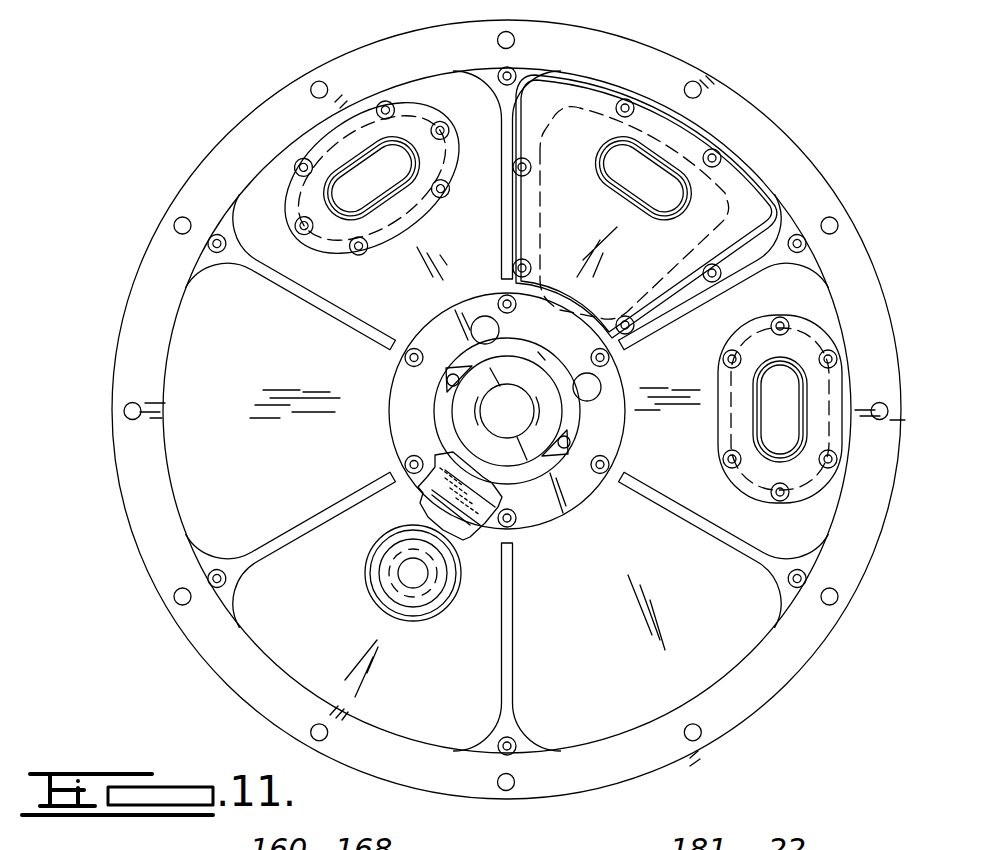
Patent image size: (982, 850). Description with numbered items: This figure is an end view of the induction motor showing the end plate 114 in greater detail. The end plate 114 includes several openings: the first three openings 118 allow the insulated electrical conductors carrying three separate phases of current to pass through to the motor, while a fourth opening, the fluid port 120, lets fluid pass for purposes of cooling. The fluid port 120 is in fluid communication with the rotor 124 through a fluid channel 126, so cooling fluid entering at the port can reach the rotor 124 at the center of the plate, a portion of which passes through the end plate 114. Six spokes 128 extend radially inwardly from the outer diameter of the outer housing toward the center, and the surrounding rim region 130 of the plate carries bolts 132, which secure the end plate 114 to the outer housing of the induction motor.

The end plate 114 is at (138, 263).
The first three openings 118 is at (376, 247).
The fluid port 120 is at (433, 619).
The rotor 124 is at (453, 424).
The fluid channel 126 is at (420, 498).
The spokes 128 is at (310, 303).
The outer rim 130 is at (127, 302).
The bolts 132 is at (311, 92).